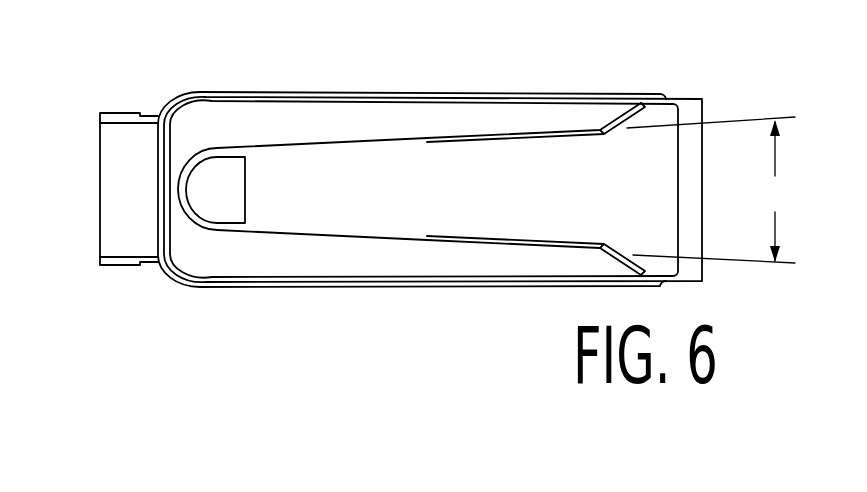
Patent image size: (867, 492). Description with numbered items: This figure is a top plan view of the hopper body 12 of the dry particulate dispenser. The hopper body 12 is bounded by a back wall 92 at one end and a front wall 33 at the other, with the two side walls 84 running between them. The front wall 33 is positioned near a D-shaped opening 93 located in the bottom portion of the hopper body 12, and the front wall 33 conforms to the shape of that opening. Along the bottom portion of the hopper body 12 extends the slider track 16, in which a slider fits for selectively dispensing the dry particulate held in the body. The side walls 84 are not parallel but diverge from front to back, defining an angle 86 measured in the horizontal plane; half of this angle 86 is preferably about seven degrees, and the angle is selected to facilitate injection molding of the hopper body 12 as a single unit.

The hopper body 12 is at (181, 59).
The slider track 16 is at (118, 113).
The front wall 33 is at (157, 178).
The D-shaped opening 93 is at (225, 172).
The side walls 84 is at (427, 138).
The back wall 92 is at (655, 148).
The angle 86 is at (711, 190).